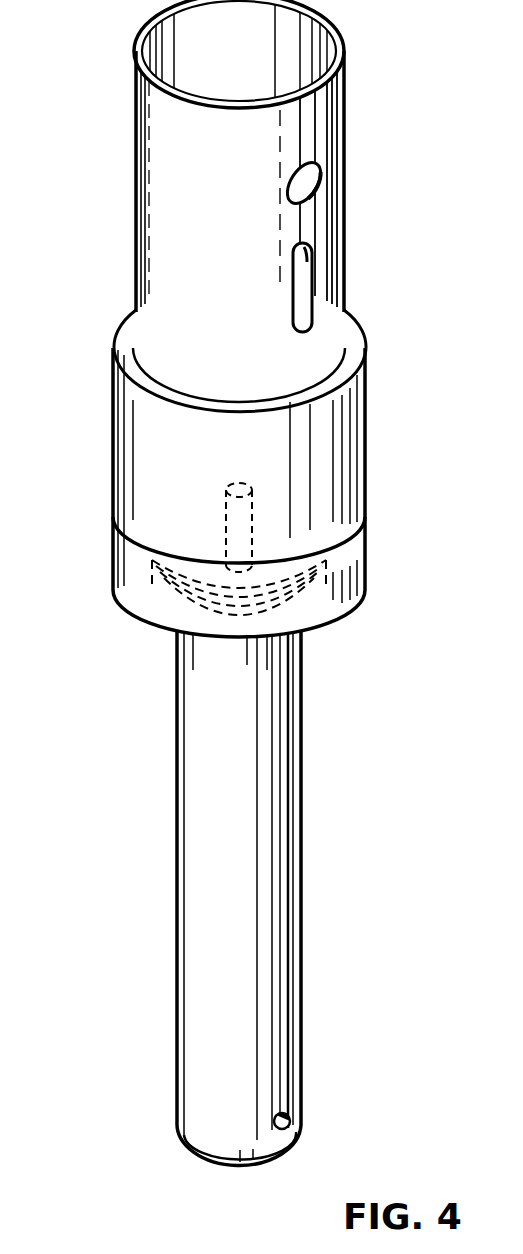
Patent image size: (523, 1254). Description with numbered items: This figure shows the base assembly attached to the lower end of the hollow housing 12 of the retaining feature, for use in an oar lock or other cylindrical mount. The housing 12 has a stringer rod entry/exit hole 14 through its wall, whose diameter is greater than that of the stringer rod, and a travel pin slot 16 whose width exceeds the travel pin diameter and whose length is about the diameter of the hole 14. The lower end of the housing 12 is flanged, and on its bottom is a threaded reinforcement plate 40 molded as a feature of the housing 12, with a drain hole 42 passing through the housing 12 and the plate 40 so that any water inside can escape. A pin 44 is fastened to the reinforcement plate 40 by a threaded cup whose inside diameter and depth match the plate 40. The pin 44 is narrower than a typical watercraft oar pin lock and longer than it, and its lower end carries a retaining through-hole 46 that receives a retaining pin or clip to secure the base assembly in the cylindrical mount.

The hollow housing 12 is at (136, 157).
The stringer rod entry/exit hole 14 is at (322, 176).
The travel pin slot 16 is at (312, 303).
The reinforcement plate 40 is at (170, 606).
The drain hole 42 is at (224, 505).
The pin 44 is at (301, 806).
The retaining through-hole 46 is at (289, 1127).